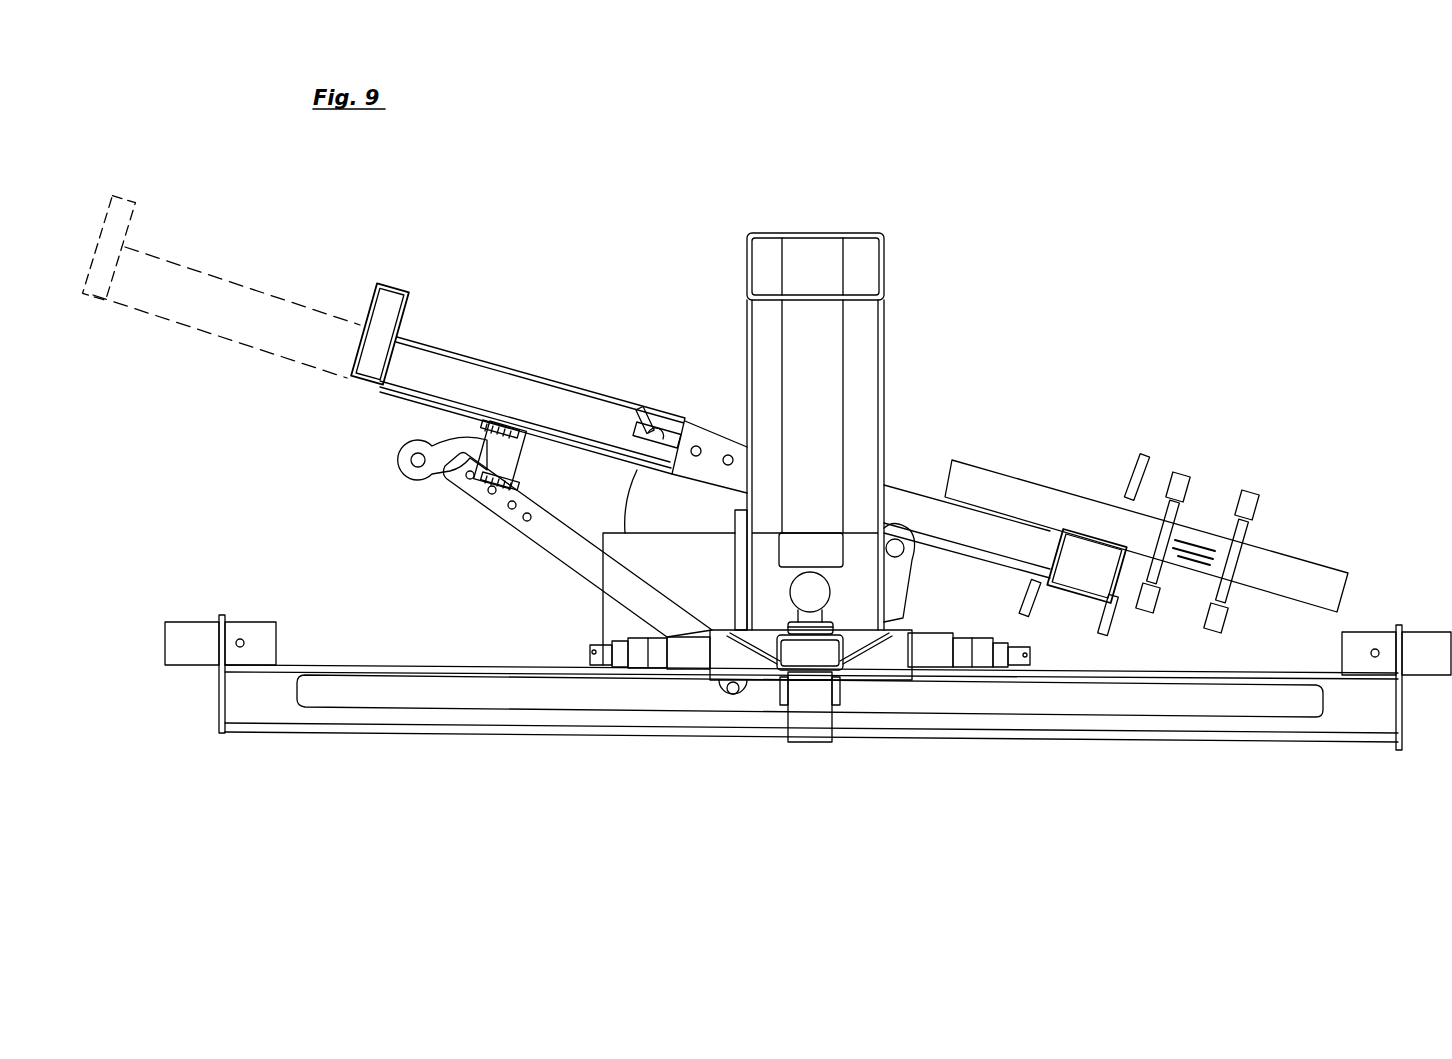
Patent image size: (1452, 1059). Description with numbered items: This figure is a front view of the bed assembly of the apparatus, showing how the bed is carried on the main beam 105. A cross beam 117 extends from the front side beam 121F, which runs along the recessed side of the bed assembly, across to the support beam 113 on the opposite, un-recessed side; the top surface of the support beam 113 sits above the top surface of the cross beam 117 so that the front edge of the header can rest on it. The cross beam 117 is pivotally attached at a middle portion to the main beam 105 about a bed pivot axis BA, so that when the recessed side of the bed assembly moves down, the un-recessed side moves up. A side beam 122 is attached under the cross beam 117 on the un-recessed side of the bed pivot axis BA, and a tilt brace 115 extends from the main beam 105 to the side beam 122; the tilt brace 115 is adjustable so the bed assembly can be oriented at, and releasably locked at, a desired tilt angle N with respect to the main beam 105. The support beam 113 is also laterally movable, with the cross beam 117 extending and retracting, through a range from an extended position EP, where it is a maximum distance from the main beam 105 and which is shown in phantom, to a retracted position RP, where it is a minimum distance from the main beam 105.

The main beam 105 is at (887, 613).
The support beam 113 is at (398, 287).
The tilt braces 115 is at (557, 567).
The cross beams 117 is at (905, 480).
The front side beam 121F is at (1093, 583).
The side beam 122 is at (523, 453).
The bed pivot axis BA is at (902, 563).
The extended position EP is at (95, 297).
The retracted position RP is at (348, 385).
The tilt angle N is at (633, 498).